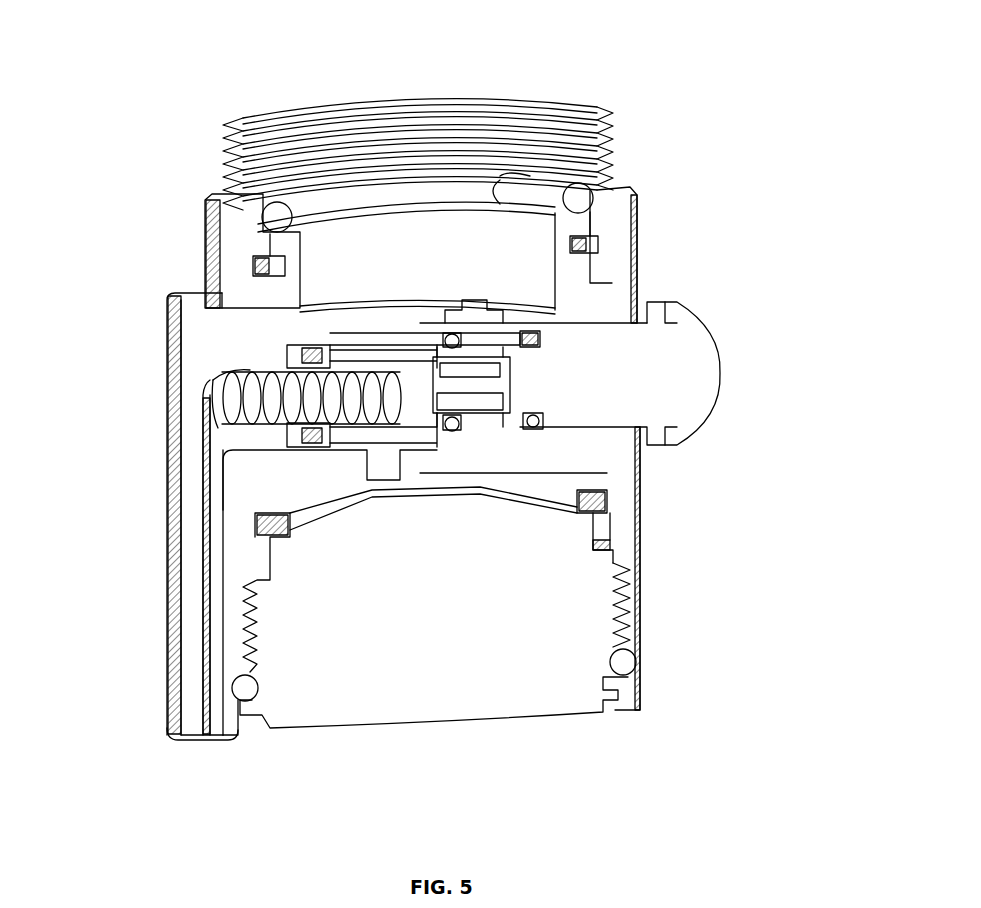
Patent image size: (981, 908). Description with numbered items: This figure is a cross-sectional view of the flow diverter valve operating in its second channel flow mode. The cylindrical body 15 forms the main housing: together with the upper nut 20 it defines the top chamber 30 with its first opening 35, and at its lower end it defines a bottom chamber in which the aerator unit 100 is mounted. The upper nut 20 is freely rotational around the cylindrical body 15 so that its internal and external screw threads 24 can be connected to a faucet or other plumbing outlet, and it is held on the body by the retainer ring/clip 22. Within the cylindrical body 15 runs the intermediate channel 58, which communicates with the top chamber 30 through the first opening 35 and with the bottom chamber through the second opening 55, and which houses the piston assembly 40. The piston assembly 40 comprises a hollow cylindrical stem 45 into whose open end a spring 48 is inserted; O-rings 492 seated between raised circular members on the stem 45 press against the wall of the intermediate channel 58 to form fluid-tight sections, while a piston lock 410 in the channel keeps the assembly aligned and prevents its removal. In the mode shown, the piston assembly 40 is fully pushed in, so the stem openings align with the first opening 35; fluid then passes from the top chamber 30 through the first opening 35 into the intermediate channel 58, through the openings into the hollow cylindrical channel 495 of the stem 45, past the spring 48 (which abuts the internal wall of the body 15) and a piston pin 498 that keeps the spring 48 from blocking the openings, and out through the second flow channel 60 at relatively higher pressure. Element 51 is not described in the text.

The cylindrical body 15 is at (168, 573).
The upper nut 20 is at (640, 222).
The retainer ring/clip 22 is at (600, 278).
The screw threads 24 is at (298, 112).
The top chamber 30 is at (405, 255).
The first opening 35 is at (478, 305).
The piston assembly 40 is at (702, 358).
The hollow cylindrical stem 45 is at (365, 360).
The spring 48 is at (247, 437).
The lower body 51 is at (637, 688).
The second opening 55 is at (412, 463).
The intermediate channel 58 is at (345, 343).
The second flow channel 60 is at (217, 723).
The aerator unit 100 is at (530, 694).
The piston lock 410 is at (297, 437).
The O-rings 492 is at (310, 448).
The hollow cylindrical channel 495 is at (300, 352).
The piston pin 498 is at (512, 413).